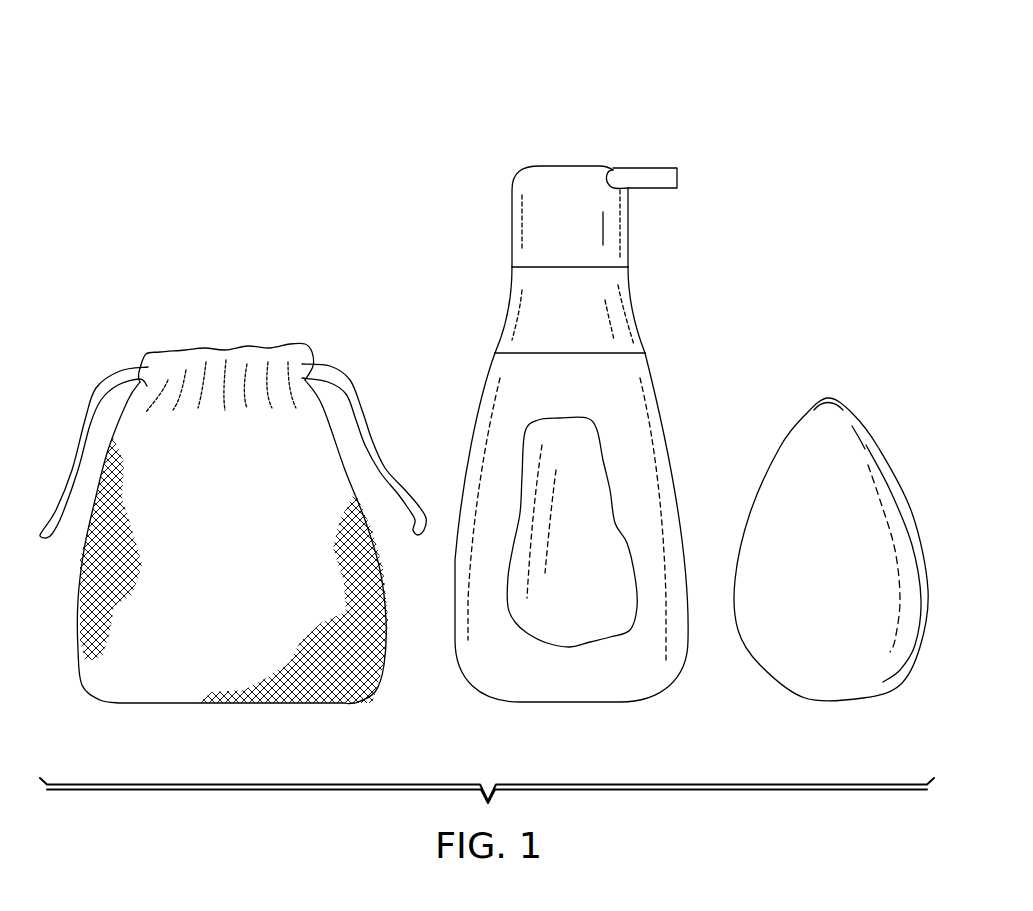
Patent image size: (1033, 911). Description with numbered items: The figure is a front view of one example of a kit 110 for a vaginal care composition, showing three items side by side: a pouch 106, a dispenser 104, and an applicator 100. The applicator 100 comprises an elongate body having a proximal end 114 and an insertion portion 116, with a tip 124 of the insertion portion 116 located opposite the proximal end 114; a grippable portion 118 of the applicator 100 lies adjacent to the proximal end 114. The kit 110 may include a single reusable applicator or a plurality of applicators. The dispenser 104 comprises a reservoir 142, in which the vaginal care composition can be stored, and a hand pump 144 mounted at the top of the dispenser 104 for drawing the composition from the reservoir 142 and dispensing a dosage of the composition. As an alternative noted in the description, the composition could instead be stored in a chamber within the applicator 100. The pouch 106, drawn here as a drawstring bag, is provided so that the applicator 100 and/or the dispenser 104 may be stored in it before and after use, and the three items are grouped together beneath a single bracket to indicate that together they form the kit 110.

The kit 110 is at (207, 97).
The dispenser 104 is at (571, 385).
The hand pump 144 is at (585, 165).
The reservoir 142 is at (560, 430).
The pouch 106 is at (168, 332).
The applicator 100 is at (819, 534).
The tip 124 is at (832, 398).
The insertion portion 116 is at (846, 477).
The grippable portion 118 is at (786, 647).
The proximal end 114 is at (883, 695).